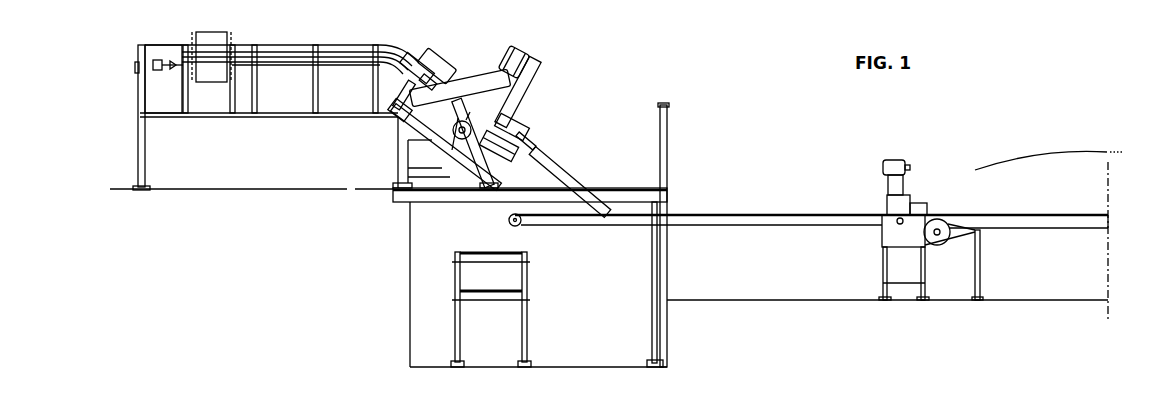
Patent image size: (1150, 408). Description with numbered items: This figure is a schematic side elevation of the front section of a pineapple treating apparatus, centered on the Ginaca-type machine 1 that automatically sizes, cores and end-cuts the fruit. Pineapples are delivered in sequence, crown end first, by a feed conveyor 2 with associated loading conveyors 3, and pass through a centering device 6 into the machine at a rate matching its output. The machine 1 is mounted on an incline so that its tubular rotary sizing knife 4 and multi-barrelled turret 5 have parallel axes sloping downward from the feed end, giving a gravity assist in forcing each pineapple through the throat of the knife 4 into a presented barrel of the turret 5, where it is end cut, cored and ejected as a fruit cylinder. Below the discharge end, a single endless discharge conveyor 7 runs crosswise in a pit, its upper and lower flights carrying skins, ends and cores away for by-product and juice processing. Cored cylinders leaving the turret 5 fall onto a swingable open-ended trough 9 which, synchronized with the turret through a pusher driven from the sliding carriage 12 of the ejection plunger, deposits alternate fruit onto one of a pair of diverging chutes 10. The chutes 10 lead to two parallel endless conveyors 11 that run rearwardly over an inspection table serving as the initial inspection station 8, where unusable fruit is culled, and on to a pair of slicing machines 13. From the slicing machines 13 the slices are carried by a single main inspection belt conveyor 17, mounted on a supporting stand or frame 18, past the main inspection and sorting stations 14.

The machine 1 is at (548, 59).
The feed conveyor 2 is at (298, 45).
The loading conveyors 3 is at (216, 64).
The tubular rotary sizing knife 4 is at (461, 98).
The multi-barrelled turret 5 is at (522, 122).
The centering device 6 is at (446, 52).
The endless discharge conveyor 7 is at (487, 251).
The inspection station 8 is at (878, 192).
The open-ended trough 9 is at (532, 141).
The diverging chutes 10 is at (570, 171).
The endless conveyors 11 is at (771, 213).
The sliding carriage 12 is at (471, 113).
The slicing machines 13 is at (893, 159).
The main inspection and sorting stations 14 is at (1048, 226).
The main or inspection belt conveyor 17 is at (1050, 216).
The supporting stand or frame 18 is at (984, 268).